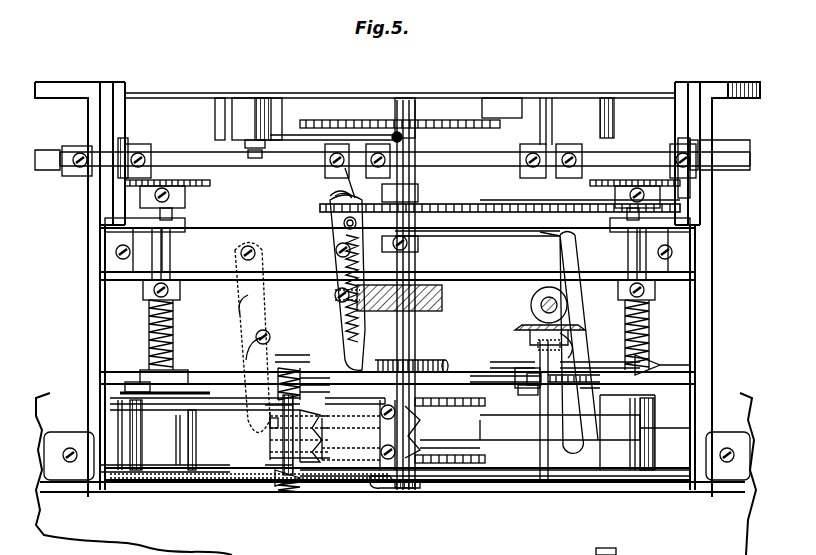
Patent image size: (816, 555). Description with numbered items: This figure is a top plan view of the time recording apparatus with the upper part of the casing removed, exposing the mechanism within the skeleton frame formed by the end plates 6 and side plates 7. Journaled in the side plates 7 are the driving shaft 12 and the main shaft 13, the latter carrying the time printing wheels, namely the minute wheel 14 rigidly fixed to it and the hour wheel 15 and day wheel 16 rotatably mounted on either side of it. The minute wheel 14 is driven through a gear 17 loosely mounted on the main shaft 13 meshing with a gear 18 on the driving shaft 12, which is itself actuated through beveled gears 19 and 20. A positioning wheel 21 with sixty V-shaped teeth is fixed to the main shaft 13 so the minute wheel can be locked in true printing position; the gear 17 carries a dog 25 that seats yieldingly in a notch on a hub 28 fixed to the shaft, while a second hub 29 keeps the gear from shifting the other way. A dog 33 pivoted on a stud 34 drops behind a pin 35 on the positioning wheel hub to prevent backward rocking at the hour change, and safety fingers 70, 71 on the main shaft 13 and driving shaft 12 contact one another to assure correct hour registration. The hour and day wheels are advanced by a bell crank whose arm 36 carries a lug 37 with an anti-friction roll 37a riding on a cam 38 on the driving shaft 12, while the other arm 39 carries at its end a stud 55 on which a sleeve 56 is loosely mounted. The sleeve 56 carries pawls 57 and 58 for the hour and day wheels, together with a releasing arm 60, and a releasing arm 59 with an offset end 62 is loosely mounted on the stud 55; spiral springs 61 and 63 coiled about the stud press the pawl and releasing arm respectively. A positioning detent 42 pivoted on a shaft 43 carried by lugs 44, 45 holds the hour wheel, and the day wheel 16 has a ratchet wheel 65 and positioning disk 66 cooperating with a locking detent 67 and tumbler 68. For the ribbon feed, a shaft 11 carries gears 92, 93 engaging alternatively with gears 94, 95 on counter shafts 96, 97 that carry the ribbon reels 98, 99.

The end plates 6 is at (88, 297).
The side plates 7 is at (487, 97).
The shaft 11 is at (470, 158).
The driving shaft 12 is at (556, 140).
The main shaft 13 is at (414, 178).
The minute wheel 14 is at (270, 438).
The hour wheel 15 is at (268, 448).
The day wheel 16 is at (268, 425).
The gear 17 is at (444, 208).
The gear 18 is at (518, 205).
The beveled gear 19 is at (578, 342).
The beveled gear 20 is at (532, 305).
The positioning wheel 21 is at (440, 128).
The dog 25 is at (338, 204).
The hub 28 is at (416, 195).
The hub 29 is at (416, 244).
The dog 33 is at (290, 135).
The stud 34 is at (258, 100).
The pin 35 is at (385, 130).
The arm 36 is at (585, 372).
The lug 37 is at (525, 392).
The anti-friction roll 37a is at (520, 370).
The cam 38 is at (480, 378).
The arm 39 is at (326, 356).
The positioning detent 42 is at (232, 478).
The shaft 43 is at (142, 430).
The lug 44 is at (133, 480).
The lug 45 is at (124, 382).
The stud 55 is at (290, 485).
The sleeve 56 is at (275, 470).
The pawl 57 is at (322, 458).
The pawl 58 is at (322, 405).
The releasing arm 59 is at (352, 482).
The releasing arm 60 is at (343, 412).
The spiral spring 61 is at (275, 372).
The offset end 62 is at (372, 488).
The spiral spring 63 is at (283, 488).
The ratchet wheel 65 is at (478, 410).
The positioning disk 66 is at (478, 404).
The locking detent 67 is at (200, 402).
The tumbler 68 is at (424, 394).
The safety finger 70 is at (440, 236).
The safety finger 71 is at (518, 224).
The gear 92 is at (680, 145).
The gear 93 is at (136, 145).
The gear 94 is at (615, 195).
The gear 95 is at (212, 183).
The counter shaft 96 is at (630, 252).
The counter shaft 97 is at (172, 258).
The reel 98 is at (627, 432).
The reel 99 is at (196, 432).